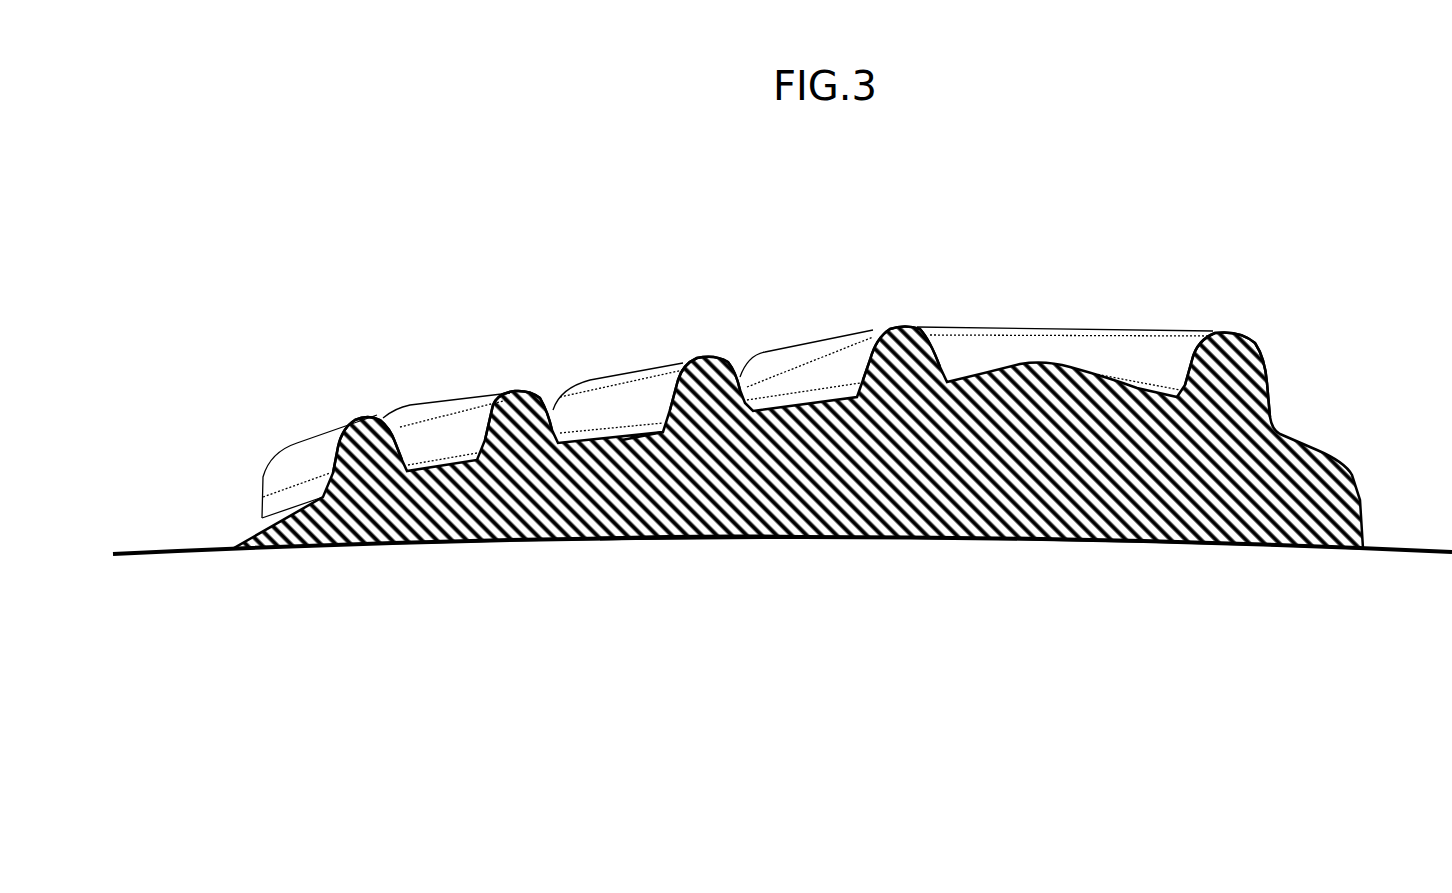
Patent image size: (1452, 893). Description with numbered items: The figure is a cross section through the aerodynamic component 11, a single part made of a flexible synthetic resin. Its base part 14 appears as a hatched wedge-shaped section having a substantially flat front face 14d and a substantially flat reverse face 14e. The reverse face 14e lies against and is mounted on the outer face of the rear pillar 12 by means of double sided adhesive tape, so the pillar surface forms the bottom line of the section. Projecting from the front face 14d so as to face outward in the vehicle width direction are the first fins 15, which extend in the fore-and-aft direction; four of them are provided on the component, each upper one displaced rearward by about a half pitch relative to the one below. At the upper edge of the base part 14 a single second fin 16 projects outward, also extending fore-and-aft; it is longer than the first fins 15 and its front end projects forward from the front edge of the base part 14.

The aerodynamic component 11 is at (1011, 262).
The rear pillar 12 is at (947, 525).
The base part 14 is at (809, 388).
The front face 14d is at (622, 440).
The reverse face 14e is at (710, 537).
The first fin 15 is at (372, 417).
The second fin 16 is at (1237, 332).